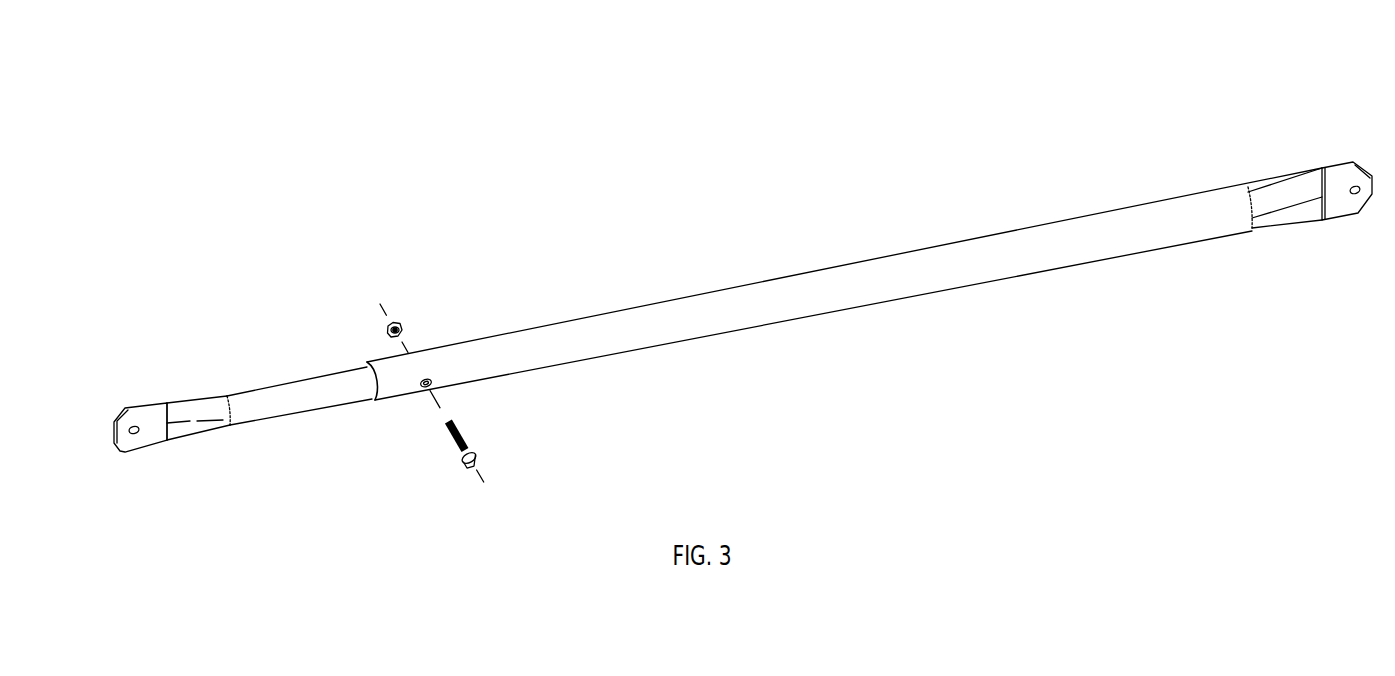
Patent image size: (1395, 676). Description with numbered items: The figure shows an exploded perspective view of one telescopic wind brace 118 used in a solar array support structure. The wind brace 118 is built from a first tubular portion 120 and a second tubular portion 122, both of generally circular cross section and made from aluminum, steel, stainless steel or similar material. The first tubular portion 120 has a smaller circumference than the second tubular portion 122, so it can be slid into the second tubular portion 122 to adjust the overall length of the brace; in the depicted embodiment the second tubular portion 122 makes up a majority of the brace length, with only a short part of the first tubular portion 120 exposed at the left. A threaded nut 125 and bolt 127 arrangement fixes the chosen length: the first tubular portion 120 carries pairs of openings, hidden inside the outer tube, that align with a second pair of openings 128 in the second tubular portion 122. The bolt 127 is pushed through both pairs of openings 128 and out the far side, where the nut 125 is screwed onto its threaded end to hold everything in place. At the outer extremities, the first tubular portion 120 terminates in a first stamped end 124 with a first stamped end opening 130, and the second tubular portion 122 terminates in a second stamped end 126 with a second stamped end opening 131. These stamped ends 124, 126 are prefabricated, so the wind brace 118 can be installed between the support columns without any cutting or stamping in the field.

The telescopic wind brace 118 is at (676, 268).
The first tubular portion 120 is at (318, 385).
The second tubular portion 122 is at (807, 283).
The first stamped end 124 is at (147, 415).
The threaded nut 125 is at (397, 318).
The second stamped end 126 is at (1340, 183).
The bolt 127 is at (462, 433).
The second pair of openings 128 is at (430, 380).
The first stamped end opening 130 is at (135, 436).
The second stamped end opening 131 is at (1352, 196).